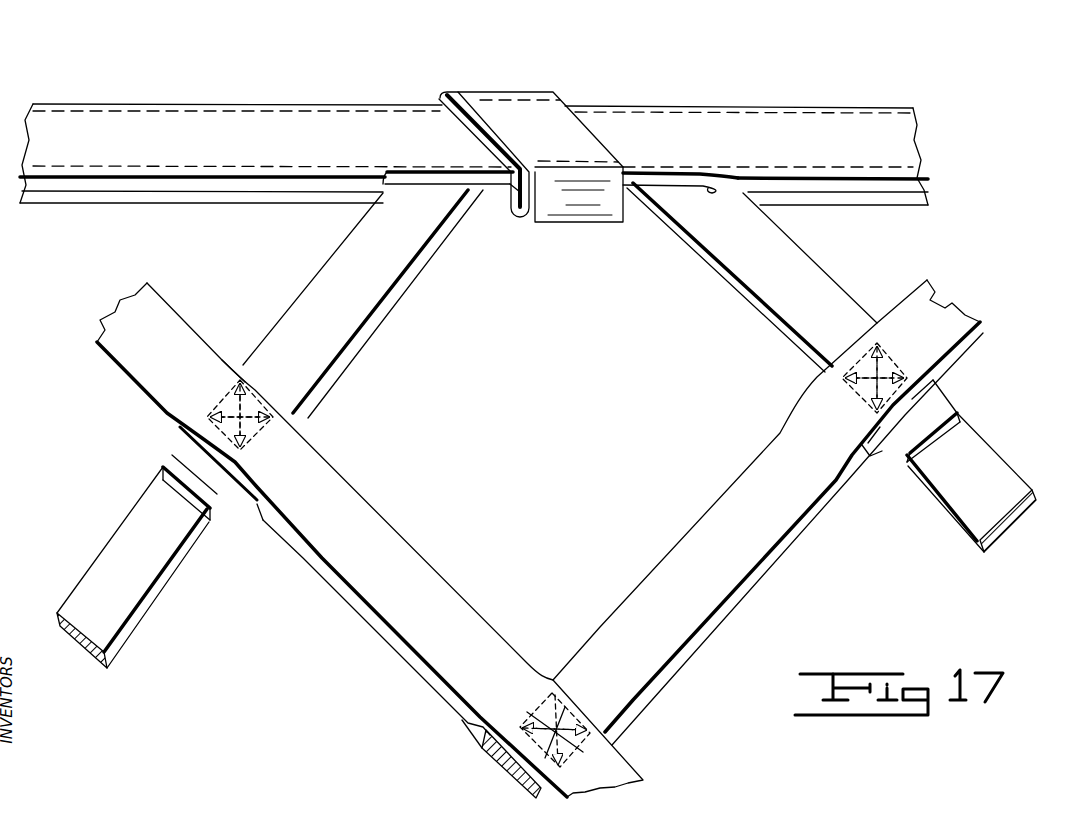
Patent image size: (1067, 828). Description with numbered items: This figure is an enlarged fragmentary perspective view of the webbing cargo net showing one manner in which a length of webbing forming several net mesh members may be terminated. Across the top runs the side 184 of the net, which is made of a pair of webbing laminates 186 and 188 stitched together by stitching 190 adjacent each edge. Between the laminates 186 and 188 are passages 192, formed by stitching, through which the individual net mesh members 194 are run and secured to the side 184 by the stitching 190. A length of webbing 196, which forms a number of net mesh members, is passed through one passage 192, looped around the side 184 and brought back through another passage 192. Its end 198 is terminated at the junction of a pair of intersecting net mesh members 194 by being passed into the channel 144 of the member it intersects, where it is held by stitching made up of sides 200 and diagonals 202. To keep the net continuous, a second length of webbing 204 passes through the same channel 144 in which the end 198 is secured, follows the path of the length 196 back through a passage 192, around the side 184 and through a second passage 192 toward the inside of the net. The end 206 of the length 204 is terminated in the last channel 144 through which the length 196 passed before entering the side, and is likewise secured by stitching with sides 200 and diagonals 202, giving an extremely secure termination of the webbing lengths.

The side 184 is at (829, 101).
The webbing laminate 186 is at (927, 184).
The webbing laminate 188 is at (912, 205).
The stitching 190 is at (904, 106).
The passage 192 is at (386, 176).
The net mesh member 194 is at (452, 600).
The length of webbing 196 is at (370, 335).
The end 198 is at (957, 410).
The stitching sides 200 is at (262, 408).
The stitching diagonals 202 is at (250, 392).
The length of webbing 204 is at (993, 466).
The end 206 is at (165, 460).
The channel 144 is at (262, 503).